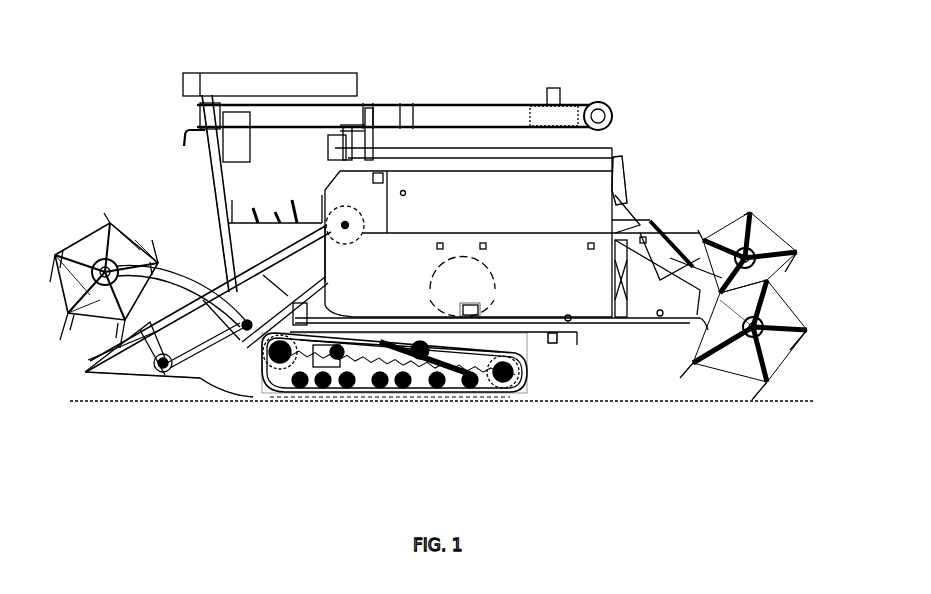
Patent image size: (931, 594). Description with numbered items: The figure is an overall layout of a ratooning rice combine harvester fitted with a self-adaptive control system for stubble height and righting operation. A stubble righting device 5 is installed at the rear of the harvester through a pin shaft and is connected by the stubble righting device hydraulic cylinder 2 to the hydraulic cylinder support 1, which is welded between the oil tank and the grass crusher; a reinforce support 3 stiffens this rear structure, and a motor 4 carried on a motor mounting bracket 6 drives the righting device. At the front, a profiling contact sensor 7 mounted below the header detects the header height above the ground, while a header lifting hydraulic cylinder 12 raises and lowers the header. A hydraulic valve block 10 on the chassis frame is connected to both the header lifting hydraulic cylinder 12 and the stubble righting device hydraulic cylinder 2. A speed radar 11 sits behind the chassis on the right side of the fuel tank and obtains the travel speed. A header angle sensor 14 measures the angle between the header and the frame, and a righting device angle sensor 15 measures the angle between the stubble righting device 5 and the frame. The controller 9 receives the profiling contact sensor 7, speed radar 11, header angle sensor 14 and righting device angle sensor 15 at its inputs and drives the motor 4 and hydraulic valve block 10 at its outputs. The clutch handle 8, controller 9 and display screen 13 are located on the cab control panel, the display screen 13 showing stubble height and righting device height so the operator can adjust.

The hydraulic cylinder support 1 is at (625, 205).
The hydraulic cylinder of stubble righting device 2 is at (640, 210).
The reinforce support 3 is at (657, 315).
The motor 4 is at (738, 318).
The stubble righting device 5 is at (746, 242).
The motor mounting bracket 6 is at (768, 378).
The profiling contact sensor 7 is at (210, 380).
The clutch handle 8 is at (258, 208).
The controller 9 is at (336, 175).
The hydraulic valve block 10 is at (460, 310).
The speed radar 11 is at (545, 345).
The header lifting hydraulic cylinder 12 is at (287, 362).
The display screen 13 is at (220, 215).
The header angle sensor 14 is at (345, 228).
The righting device angle sensor 15 is at (568, 322).